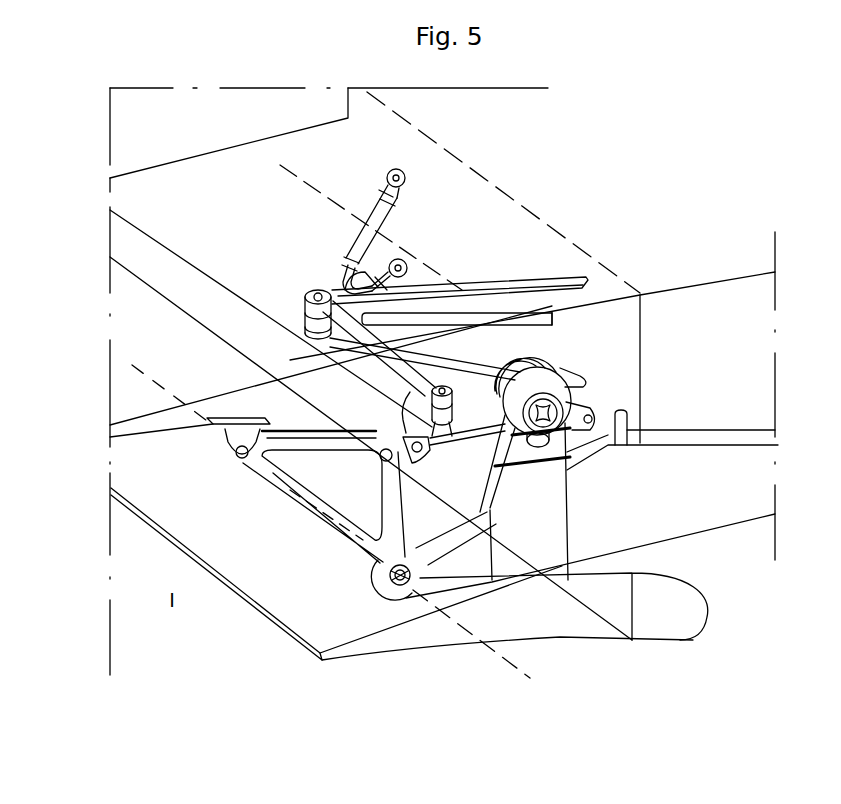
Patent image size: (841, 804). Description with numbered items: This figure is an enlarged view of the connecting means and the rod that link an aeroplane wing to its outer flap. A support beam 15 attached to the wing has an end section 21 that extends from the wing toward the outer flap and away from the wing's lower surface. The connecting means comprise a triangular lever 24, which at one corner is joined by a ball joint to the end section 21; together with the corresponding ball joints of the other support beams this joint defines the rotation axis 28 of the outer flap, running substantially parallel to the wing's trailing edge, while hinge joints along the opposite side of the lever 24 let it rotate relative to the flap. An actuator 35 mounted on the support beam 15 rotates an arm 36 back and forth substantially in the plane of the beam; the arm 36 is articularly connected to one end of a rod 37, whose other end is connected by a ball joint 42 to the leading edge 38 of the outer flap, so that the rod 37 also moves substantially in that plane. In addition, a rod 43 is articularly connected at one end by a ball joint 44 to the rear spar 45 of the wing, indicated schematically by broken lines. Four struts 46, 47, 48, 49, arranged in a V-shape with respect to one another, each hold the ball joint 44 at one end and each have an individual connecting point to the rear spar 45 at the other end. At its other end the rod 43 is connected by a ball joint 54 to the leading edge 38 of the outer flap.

The support beam 15 is at (742, 510).
The end section 21 is at (403, 595).
The lever 24 is at (298, 498).
The rotation axis 28 is at (502, 655).
The actuator 35 is at (578, 395).
The arm 36 is at (595, 417).
The rod 37 is at (473, 437).
The leading edge 38 is at (708, 618).
The ball joint 42 is at (417, 470).
The rod 43 is at (335, 337).
The ball joint 44 is at (303, 316).
The rear spar 45 is at (452, 171).
The strut 46 is at (368, 208).
The strut 47 is at (504, 277).
The strut 48 is at (368, 285).
The strut 49 is at (513, 358).
The ball joint 54 is at (445, 432).